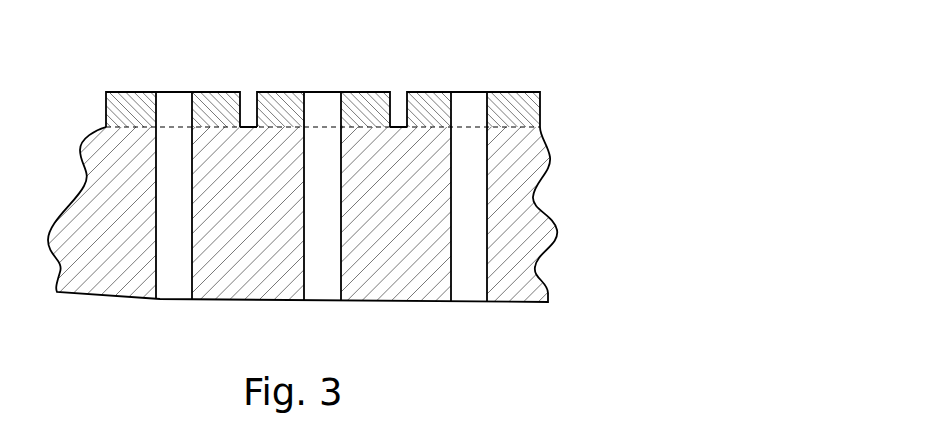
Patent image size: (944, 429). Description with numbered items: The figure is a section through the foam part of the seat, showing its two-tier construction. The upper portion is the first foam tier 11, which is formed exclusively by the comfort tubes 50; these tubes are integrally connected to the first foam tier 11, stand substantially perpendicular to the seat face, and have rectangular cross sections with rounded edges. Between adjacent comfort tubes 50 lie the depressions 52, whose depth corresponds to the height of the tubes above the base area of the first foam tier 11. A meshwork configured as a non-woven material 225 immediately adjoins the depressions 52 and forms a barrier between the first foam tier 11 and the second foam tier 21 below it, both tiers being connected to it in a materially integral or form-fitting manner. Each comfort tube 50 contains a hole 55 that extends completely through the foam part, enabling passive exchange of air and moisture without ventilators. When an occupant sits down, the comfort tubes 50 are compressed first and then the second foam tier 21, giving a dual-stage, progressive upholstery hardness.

The first foam tier 11 is at (352, 71).
The second foam tier 21 is at (518, 254).
The comfort tubes 50 is at (134, 104).
The depressions 52 is at (247, 102).
The hole 55 is at (172, 283).
The non-woven material 225 is at (518, 130).